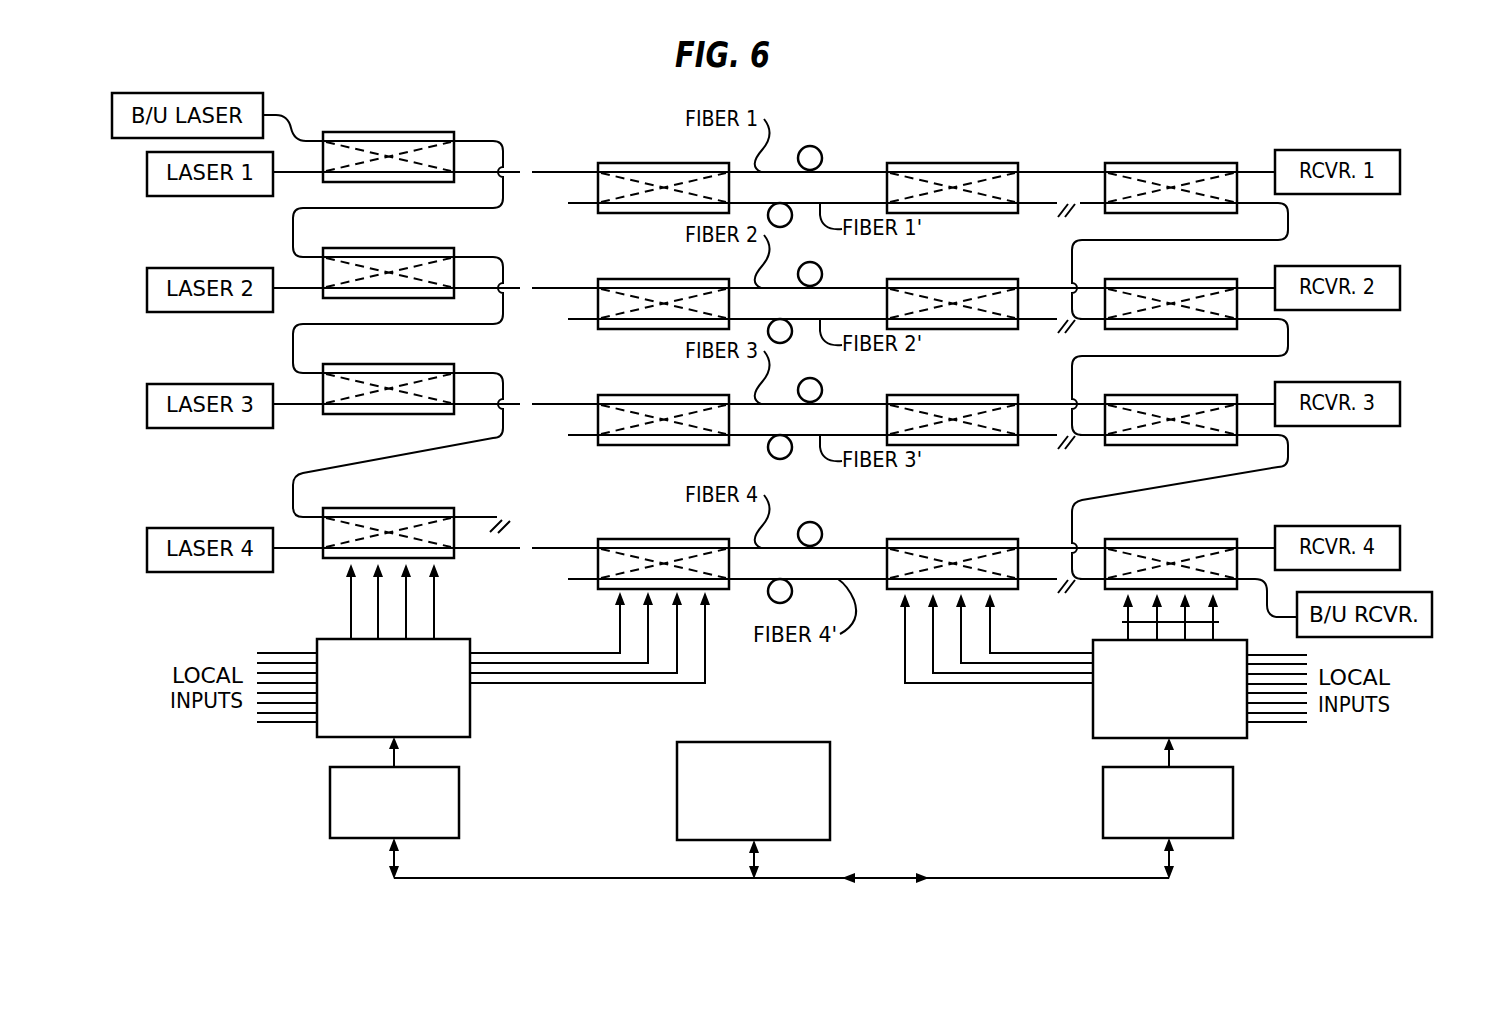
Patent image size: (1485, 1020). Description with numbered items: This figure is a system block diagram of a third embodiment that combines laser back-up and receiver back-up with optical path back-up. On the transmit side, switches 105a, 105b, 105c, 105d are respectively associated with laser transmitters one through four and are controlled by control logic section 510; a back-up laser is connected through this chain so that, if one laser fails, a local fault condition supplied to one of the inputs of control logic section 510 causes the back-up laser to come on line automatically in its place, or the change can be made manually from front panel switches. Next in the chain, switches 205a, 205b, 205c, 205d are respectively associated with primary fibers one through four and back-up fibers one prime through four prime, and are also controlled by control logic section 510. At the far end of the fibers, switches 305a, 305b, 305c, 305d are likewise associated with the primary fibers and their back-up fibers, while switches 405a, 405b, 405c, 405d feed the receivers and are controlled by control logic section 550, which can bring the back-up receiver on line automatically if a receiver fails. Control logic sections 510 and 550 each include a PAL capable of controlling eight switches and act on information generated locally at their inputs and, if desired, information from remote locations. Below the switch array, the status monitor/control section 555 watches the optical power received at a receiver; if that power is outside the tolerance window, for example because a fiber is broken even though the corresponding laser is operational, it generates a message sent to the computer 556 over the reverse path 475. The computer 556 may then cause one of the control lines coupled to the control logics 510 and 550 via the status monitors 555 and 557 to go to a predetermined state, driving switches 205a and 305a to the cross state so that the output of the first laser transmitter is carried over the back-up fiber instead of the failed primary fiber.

The switch 105a is at (365, 132).
The switch 105b is at (365, 248).
The switch 105c is at (365, 364).
The switch 105d is at (365, 508).
The switch 205a is at (640, 163).
The switch 205b is at (640, 279).
The switch 205c is at (640, 395).
The switch 205d is at (640, 539).
The switch 305a is at (929, 163).
The switch 305b is at (929, 279).
The switch 305c is at (929, 395).
The switch 305d is at (929, 539).
The switch 405a is at (1147, 163).
The switch 405b is at (1147, 279).
The switch 405c is at (1147, 395).
The switch 405d is at (1147, 539).
The control logic section 510 is at (456, 639).
The control logic section 550 is at (1108, 640).
The status monitor/control section 555 is at (1103, 795).
The computer 556 is at (737, 742).
The status monitor 557 is at (459, 792).
The reverse path 475 is at (532, 878).